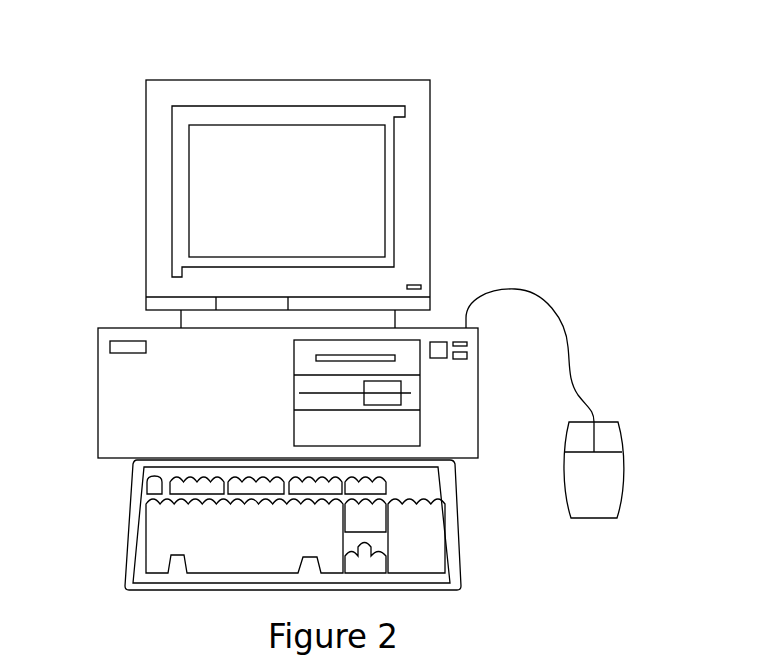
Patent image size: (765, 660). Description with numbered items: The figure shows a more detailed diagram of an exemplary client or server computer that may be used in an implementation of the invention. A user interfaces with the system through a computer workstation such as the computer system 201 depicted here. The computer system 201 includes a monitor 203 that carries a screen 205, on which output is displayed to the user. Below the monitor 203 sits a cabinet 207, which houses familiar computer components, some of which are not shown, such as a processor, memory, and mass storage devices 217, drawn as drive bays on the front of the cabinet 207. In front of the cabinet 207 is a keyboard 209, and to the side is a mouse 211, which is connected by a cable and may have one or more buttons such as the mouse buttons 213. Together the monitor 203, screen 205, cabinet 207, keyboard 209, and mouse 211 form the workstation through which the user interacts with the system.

The computer system 201 is at (450, 57).
The monitor 203 is at (431, 167).
The screen 205 is at (206, 180).
The cabinet 207 is at (126, 332).
The keyboard 209 is at (170, 591).
The mouse 211 is at (595, 507).
The mouse buttons 213 is at (608, 440).
The mass storage devices 217 is at (410, 343).